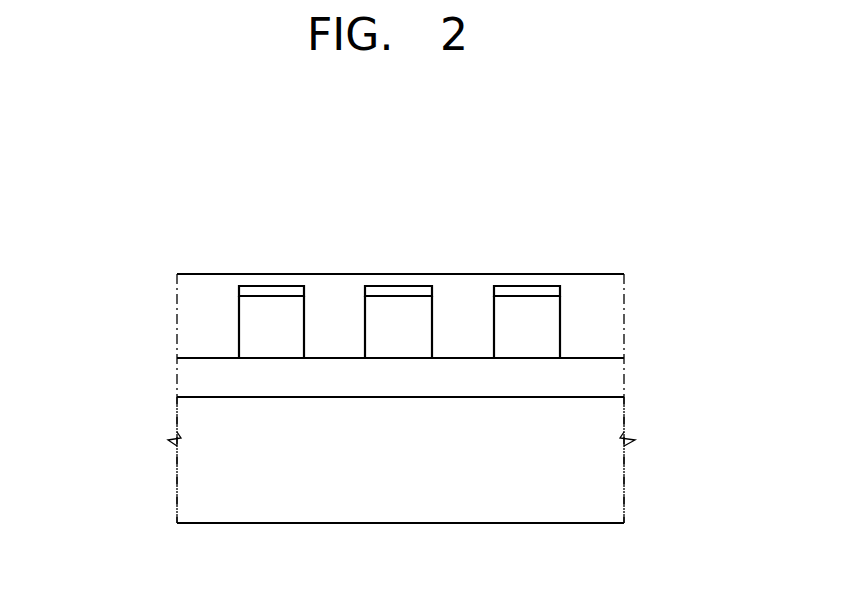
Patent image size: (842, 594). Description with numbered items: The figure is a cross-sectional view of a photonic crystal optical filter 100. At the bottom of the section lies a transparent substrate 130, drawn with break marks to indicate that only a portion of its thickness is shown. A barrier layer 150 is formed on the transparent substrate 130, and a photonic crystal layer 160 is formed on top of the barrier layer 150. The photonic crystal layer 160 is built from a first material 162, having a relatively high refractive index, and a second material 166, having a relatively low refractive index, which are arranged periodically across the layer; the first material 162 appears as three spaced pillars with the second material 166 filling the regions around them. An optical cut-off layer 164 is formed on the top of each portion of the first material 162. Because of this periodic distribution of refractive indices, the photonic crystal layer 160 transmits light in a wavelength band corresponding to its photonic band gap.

The photonic crystal optical filter 100 is at (659, 240).
The transparent substrate 130 is at (182, 467).
The barrier layer 150 is at (182, 379).
The photonic crystal layer 160 is at (102, 262).
The first material 162 is at (243, 336).
The optical cut-off layer 164 is at (239, 292).
The second material 166 is at (178, 281).